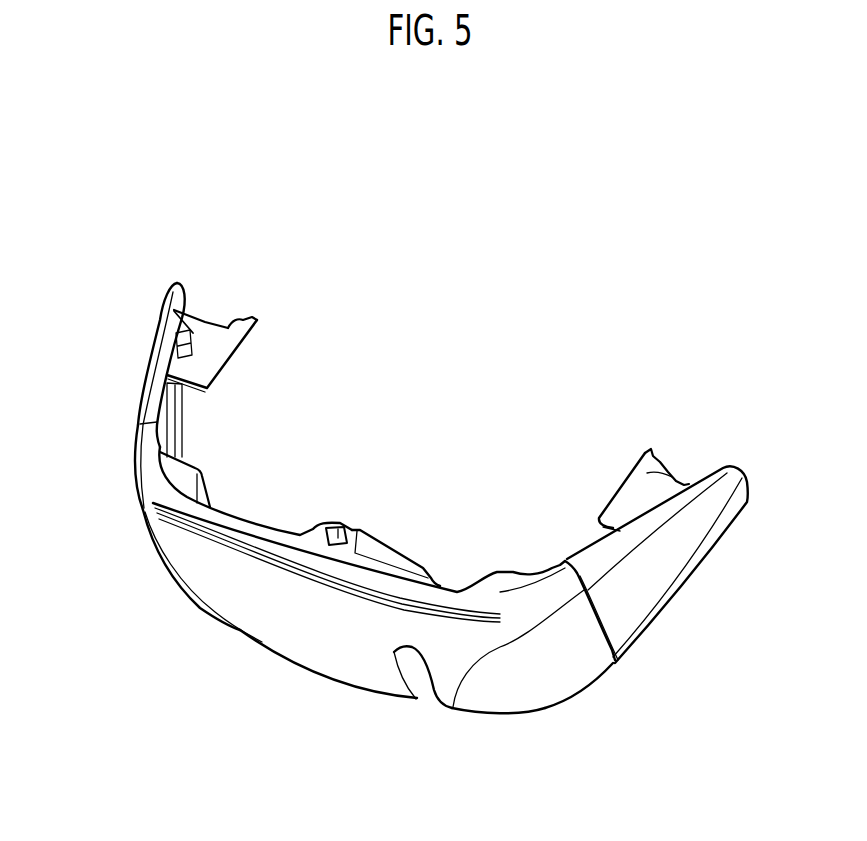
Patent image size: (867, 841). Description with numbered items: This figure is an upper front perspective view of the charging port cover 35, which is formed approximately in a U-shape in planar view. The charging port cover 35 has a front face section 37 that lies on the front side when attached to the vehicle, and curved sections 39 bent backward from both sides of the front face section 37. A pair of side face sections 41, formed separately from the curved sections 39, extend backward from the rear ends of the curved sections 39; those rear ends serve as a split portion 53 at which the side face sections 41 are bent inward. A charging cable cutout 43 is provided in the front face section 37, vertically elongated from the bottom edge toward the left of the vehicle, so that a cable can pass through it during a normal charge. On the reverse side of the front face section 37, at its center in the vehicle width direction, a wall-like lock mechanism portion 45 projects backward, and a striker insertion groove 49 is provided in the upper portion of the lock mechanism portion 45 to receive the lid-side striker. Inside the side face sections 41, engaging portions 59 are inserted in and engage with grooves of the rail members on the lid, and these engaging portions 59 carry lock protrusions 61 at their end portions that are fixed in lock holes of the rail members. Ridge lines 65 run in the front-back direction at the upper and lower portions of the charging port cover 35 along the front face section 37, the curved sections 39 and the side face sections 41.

The charging port cover 35 is at (441, 283).
The front face section 37 is at (307, 654).
The curved section 39 is at (617, 671).
The side face section 41 is at (158, 349).
The charging cable cutout 43 is at (422, 682).
The lock mechanism portion 45 is at (402, 552).
The striker insertion groove 49 is at (345, 518).
The split portion 53 is at (607, 633).
The engaging portion 59 is at (221, 355).
The lock protrusion 61 is at (249, 310).
The ridge line 65 is at (657, 540).